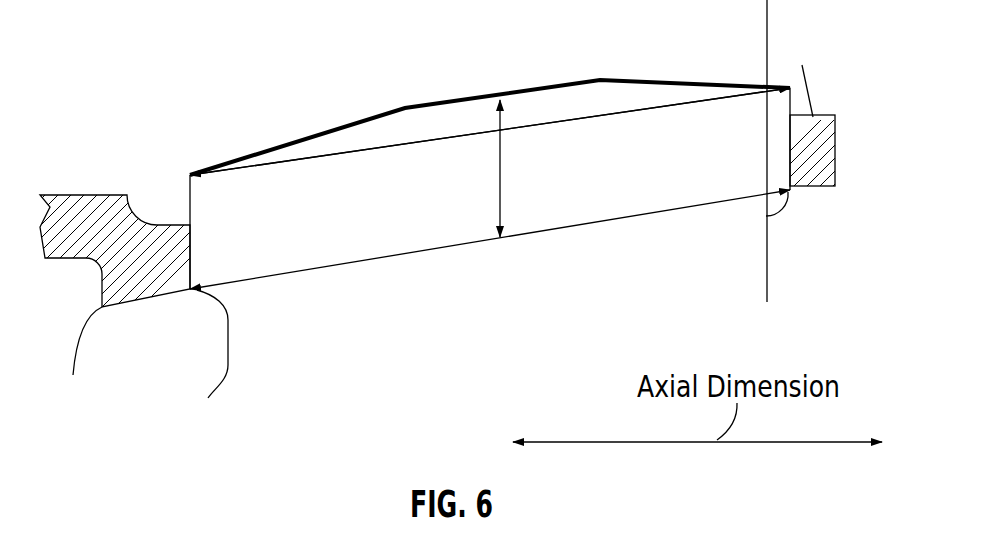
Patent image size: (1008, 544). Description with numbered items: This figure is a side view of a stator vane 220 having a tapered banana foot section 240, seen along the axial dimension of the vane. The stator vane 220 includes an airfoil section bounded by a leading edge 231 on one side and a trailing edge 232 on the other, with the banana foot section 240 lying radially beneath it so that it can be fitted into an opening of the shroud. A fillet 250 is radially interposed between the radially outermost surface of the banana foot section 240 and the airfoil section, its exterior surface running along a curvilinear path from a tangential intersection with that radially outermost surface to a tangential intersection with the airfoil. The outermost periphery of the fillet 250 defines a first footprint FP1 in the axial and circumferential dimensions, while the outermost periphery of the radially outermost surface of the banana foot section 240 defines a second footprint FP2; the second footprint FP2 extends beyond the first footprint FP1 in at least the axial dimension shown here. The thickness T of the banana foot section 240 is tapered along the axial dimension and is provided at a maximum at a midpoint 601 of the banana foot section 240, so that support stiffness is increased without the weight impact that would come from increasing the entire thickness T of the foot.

The stator vane 220 is at (232, 340).
The leading edge 231 is at (210, 417).
The trailing edge 232 is at (768, 262).
The banana foot section 240 is at (260, 148).
The fillet 250 is at (215, 310).
The midpoint 601 is at (500, 130).
The first footprint FP1 is at (595, 223).
The second footprint FP2 is at (387, 148).
The thickness T is at (500, 160).